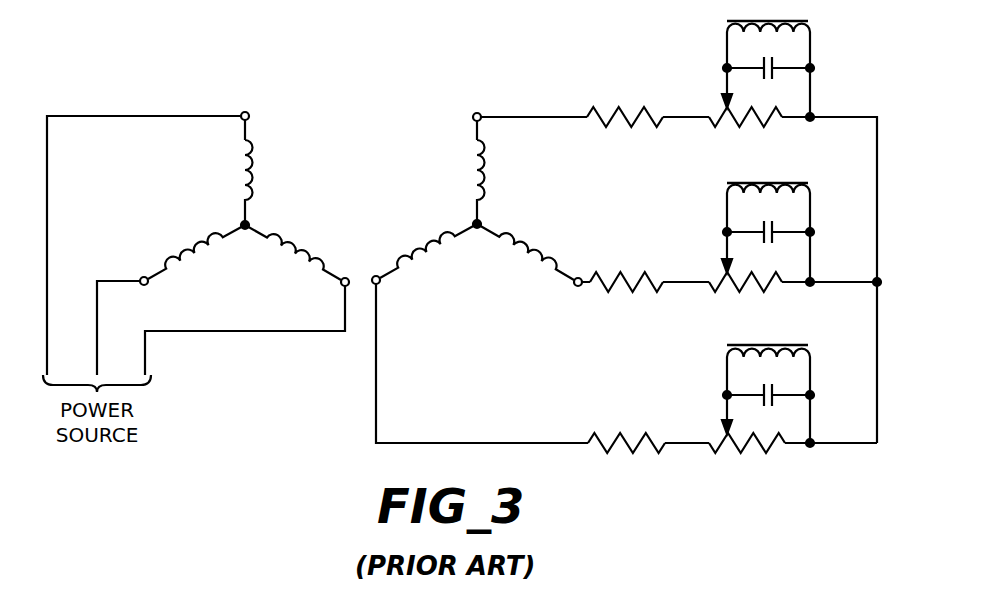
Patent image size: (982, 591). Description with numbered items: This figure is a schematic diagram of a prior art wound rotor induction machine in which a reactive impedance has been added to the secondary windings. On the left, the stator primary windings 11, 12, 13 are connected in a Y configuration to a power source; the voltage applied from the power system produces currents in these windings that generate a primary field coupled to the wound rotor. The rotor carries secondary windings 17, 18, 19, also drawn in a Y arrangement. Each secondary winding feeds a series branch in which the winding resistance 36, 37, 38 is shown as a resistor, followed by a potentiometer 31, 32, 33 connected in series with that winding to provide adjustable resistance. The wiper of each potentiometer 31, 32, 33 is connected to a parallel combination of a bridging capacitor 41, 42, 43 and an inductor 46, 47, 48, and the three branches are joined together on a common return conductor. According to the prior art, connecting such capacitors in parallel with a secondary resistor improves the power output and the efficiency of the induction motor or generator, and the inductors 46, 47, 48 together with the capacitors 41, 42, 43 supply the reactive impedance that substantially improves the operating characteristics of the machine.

The primary winding 11 is at (250, 145).
The primary winding 12 is at (183, 255).
The primary winding 13 is at (290, 258).
The rotor winding 17 is at (475, 152).
The rotor winding 18 is at (420, 250).
The rotor winding 19 is at (517, 263).
The potentiometer 31 is at (724, 108).
The potentiometer 32 is at (724, 273).
The potentiometer 33 is at (725, 434).
The winding resistance 36 is at (617, 112).
The winding resistance 37 is at (617, 276).
The winding resistance 38 is at (617, 437).
The bridging capacitor 41 is at (775, 74).
The bridging capacitor 42 is at (775, 237).
The bridging capacitor 43 is at (778, 400).
The inductor 46 is at (811, 36).
The inductor 47 is at (811, 197).
The inductor 48 is at (812, 361).